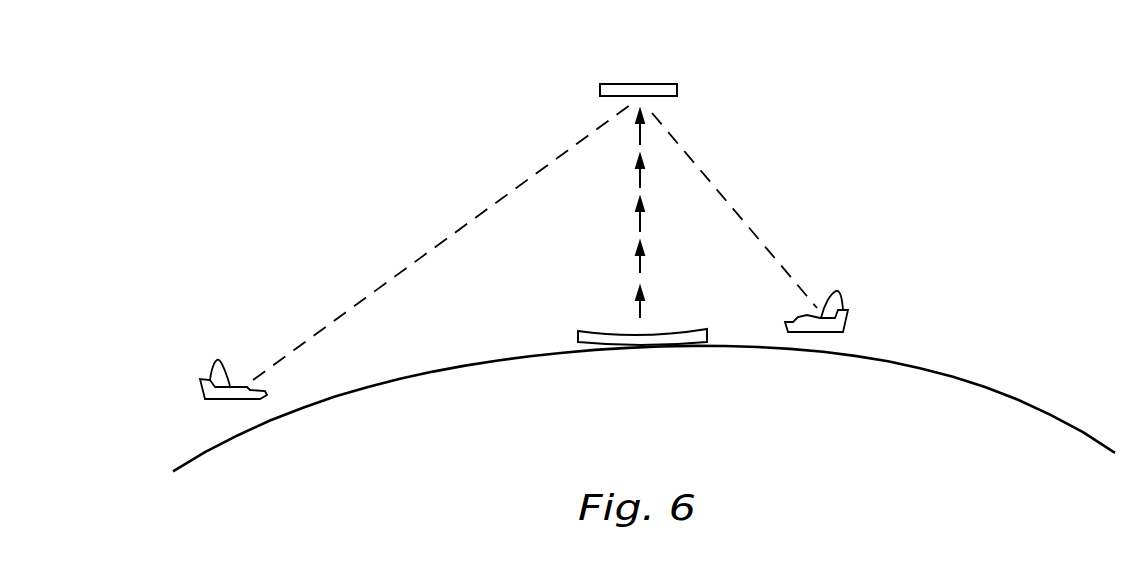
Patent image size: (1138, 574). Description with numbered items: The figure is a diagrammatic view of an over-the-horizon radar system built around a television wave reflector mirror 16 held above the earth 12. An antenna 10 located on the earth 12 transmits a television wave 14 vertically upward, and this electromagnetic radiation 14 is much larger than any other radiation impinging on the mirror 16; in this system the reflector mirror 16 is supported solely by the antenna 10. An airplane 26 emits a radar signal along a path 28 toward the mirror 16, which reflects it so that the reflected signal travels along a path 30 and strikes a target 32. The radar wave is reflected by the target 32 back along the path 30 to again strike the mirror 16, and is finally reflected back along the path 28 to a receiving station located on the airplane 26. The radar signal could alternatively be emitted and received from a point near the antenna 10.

The antenna 10 is at (638, 353).
The earth 12 is at (1043, 410).
The television wave 14 is at (645, 263).
The reflector mirror 16 is at (613, 77).
The airplane 26 is at (838, 298).
The path 28 is at (738, 220).
The path 30 is at (430, 252).
The target 32 is at (210, 380).